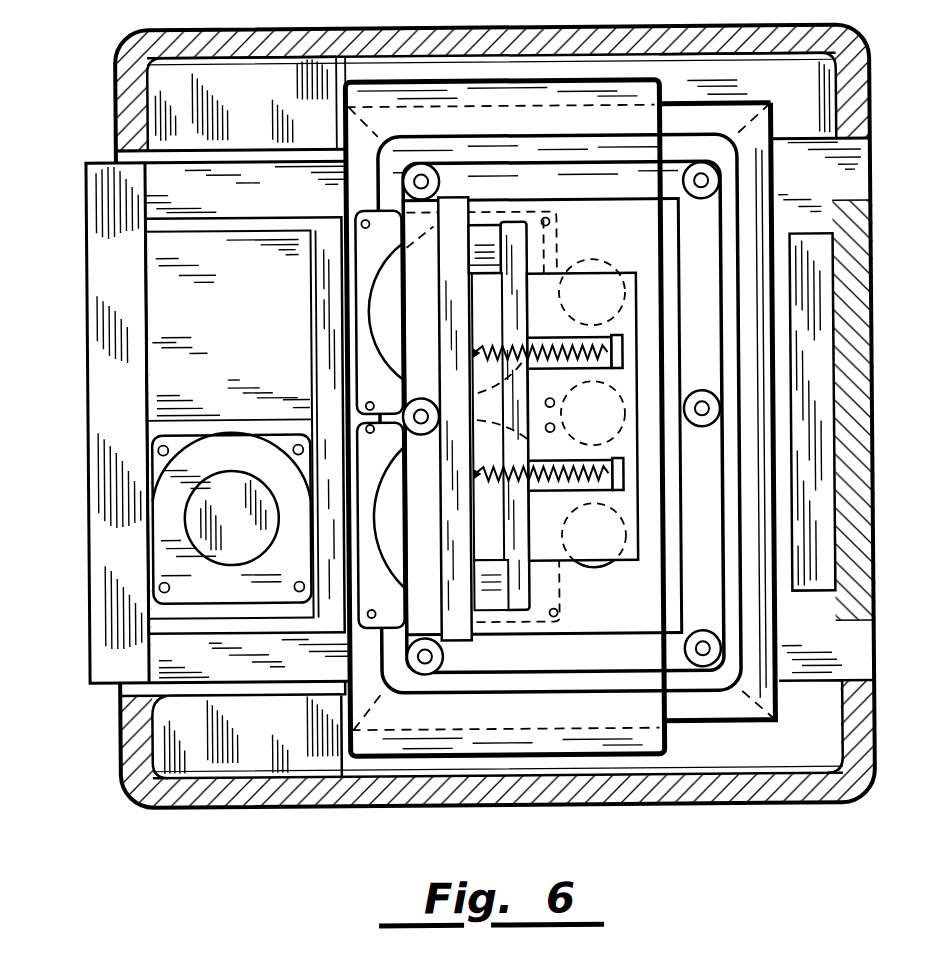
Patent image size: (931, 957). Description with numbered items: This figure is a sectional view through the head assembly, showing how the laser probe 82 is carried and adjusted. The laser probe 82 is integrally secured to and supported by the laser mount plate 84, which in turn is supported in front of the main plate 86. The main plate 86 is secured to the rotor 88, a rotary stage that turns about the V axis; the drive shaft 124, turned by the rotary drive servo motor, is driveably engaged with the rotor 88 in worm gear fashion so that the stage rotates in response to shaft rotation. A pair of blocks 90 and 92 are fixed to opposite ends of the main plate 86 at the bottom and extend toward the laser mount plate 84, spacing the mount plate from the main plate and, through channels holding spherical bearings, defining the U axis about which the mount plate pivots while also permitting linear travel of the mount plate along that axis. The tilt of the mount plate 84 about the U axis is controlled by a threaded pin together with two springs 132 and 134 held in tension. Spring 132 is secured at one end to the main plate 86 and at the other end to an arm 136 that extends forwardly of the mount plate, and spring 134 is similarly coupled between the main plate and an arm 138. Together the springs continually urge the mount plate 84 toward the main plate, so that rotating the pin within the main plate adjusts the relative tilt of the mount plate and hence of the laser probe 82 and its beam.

The laser probe 82 is at (632, 437).
The laser mount plate 84 is at (517, 303).
The main plate 86 is at (452, 287).
The rotor 88 is at (190, 313).
The block 90 is at (483, 583).
The block 92 is at (483, 240).
The drive shaft 124 is at (205, 500).
The spring 132 is at (584, 477).
The spring 134 is at (585, 347).
The arm 136 is at (622, 481).
The arm 138 is at (623, 343).